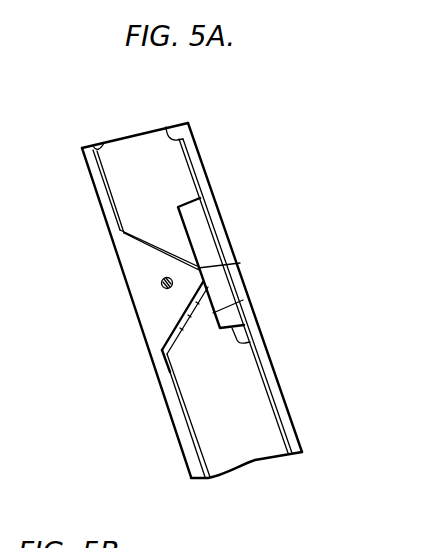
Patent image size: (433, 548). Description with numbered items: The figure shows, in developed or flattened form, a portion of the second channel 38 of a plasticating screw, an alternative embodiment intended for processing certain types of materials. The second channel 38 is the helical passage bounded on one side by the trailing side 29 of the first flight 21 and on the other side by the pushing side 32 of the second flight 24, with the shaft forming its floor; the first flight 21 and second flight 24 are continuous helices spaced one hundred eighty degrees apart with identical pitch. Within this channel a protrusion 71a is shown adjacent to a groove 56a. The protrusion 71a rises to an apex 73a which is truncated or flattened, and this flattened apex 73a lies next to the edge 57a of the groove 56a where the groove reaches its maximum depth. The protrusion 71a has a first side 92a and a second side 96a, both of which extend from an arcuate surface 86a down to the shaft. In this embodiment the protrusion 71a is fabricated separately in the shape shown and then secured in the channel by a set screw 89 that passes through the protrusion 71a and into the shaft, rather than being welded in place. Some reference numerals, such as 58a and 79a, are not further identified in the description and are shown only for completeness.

The first flight 21 is at (83, 146).
The second flight 24 is at (188, 123).
The trailing side 29 is at (99, 146).
The pushing side 32 is at (166, 127).
The second channel 38 is at (140, 141).
The groove 56a is at (207, 240).
The edge 57a is at (243, 300).
The tab 58a is at (250, 342).
The protrusion 71a is at (138, 273).
The apex 73a is at (240, 263).
The lower cut edge 79a is at (157, 342).
The arcuate surface 86a is at (142, 258).
The set screw 89 is at (162, 292).
The first side 92a is at (183, 318).
The second side 96a is at (146, 243).